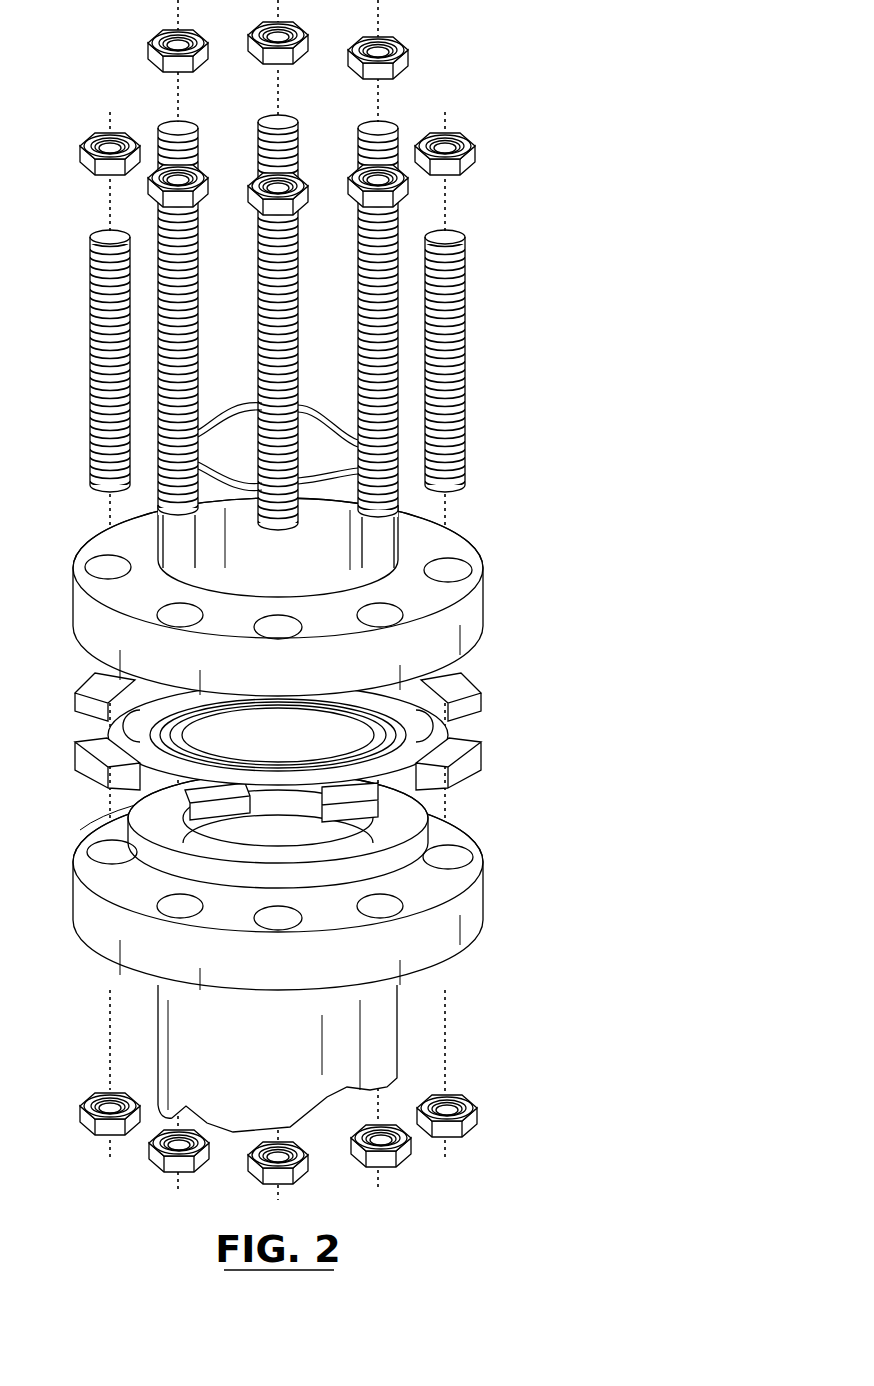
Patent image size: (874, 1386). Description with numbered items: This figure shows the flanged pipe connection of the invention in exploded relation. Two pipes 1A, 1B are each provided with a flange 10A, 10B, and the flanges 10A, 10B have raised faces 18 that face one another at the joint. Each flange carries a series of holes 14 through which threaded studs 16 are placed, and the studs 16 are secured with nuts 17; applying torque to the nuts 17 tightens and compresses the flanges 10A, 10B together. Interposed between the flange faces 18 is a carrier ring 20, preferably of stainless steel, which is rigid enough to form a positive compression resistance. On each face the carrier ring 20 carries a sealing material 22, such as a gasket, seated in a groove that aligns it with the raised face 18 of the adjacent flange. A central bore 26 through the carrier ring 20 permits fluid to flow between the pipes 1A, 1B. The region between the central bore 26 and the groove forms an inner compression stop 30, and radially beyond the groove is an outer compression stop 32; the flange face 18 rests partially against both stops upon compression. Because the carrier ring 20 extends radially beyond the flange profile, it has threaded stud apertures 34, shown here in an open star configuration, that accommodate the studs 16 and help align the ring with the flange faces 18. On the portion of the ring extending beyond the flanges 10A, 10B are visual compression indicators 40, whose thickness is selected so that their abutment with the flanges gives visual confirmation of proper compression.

The pipe 1A is at (232, 570).
The pipe 1B is at (234, 1053).
The flange 10A is at (480, 604).
The flange 10B is at (482, 900).
The holes 14 is at (100, 560).
The threaded studs 16 is at (172, 128).
The nuts 17 is at (158, 40).
The raised faces 18 is at (288, 705).
The carrier ring 20 is at (125, 742).
The sealing material 22 is at (445, 732).
The central bore 26 is at (437, 802).
The inner compression stop 30 is at (200, 700).
The outer compression stop 32 is at (80, 830).
The threaded stud apertures 34 is at (135, 792).
The visual compression indicators 40 is at (95, 690).